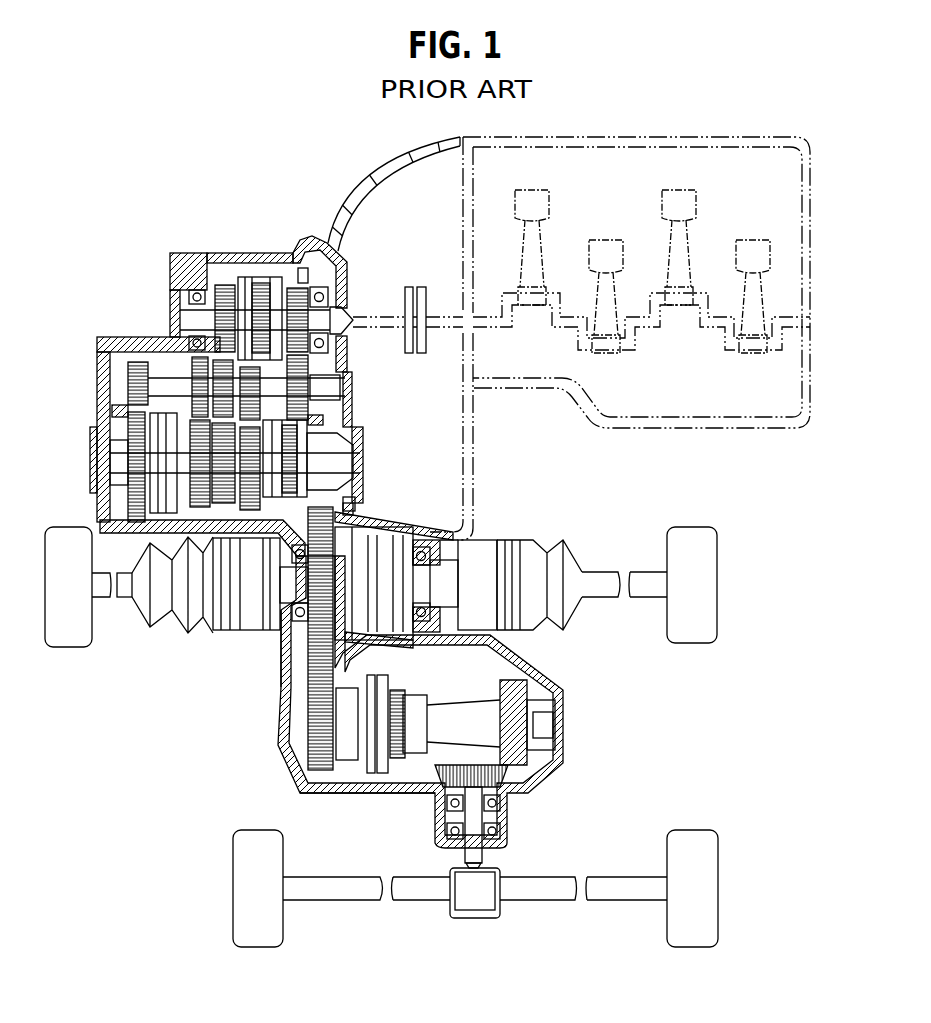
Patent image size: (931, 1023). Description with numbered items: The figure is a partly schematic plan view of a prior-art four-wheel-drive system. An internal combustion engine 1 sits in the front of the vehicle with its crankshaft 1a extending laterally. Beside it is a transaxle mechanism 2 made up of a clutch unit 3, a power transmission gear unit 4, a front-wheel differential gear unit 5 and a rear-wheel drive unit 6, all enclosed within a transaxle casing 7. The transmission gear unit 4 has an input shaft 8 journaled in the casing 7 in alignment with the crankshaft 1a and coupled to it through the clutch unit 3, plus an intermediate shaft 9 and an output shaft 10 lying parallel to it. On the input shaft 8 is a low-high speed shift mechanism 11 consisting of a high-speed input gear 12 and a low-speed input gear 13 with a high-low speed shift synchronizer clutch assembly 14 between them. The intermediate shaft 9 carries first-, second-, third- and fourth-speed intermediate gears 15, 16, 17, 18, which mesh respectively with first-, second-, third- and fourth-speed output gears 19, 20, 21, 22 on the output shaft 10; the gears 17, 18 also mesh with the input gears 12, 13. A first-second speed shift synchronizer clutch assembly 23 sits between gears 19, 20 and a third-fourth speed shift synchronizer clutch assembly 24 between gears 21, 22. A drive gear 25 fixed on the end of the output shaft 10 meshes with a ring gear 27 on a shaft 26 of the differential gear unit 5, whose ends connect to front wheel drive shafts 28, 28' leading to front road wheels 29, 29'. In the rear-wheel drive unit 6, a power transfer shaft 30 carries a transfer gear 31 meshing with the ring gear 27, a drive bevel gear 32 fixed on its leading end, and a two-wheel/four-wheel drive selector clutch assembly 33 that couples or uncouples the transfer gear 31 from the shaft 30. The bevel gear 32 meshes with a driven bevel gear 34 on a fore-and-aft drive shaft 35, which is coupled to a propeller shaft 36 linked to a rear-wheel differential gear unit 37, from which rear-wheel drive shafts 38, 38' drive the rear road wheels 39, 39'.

The internal combustion engine 1 is at (655, 430).
The crankshaft 1a is at (486, 330).
The transaxle mechanism 2 is at (257, 688).
The clutch unit 3 is at (412, 286).
The power transmission gear unit 4 is at (120, 290).
The front-wheel differential gear unit 5 is at (490, 518).
The rear-wheel drive unit 6 is at (566, 718).
The transaxle casing 7 is at (375, 185).
The input shaft 8 is at (338, 311).
The intermediate shaft 9 is at (335, 396).
The output shaft 10 is at (360, 475).
The low-high speed shift mechanism 11 is at (207, 275).
The high-speed input gear 12 is at (222, 283).
The low-speed input gear 13 is at (296, 286).
The high-low speed shift synchronizer clutch assembly 14 is at (270, 277).
The first-speed intermediate gear 15 is at (152, 343).
The second-speed intermediate gear 16 is at (192, 380).
The third-speed intermediate gear 17 is at (258, 366).
The fourth-speed intermediate gear 18 is at (312, 386).
The first-speed output gear 19 is at (135, 496).
The second-speed output gear 20 is at (200, 520).
The third-speed output gear 21 is at (245, 513).
The fourth-speed output gear 22 is at (342, 462).
The first-second speed shift synchronizer clutch assembly 23 is at (135, 413).
The third-fourth speed shift synchronizer clutch assembly 24 is at (320, 425).
The drive gear 25 is at (352, 506).
The shaft 26 is at (445, 565).
The ring gear 27 is at (310, 660).
The front wheel drive shaft 28 is at (198, 596).
The front wheel drive shaft 28' is at (540, 583).
The front road wheel 29 is at (87, 591).
The front road wheel 29' is at (691, 580).
The power transfer shaft 30 is at (470, 712).
The transfer gear 31 is at (325, 790).
The drive bevel gear 32 is at (505, 681).
The two-wheel/four-wheel drive selector clutch assembly 33 is at (380, 668).
The driven bevel gear 34 is at (440, 771).
The drive shaft 35 is at (500, 815).
The propeller shaft 36 is at (484, 864).
The rear-wheel differential gear unit 37 is at (450, 868).
The rear-wheel drive shaft 38 is at (366, 903).
The rear-wheel drive shaft 38' is at (583, 904).
The rear road wheel 39 is at (258, 869).
The rear road wheel 39' is at (692, 869).